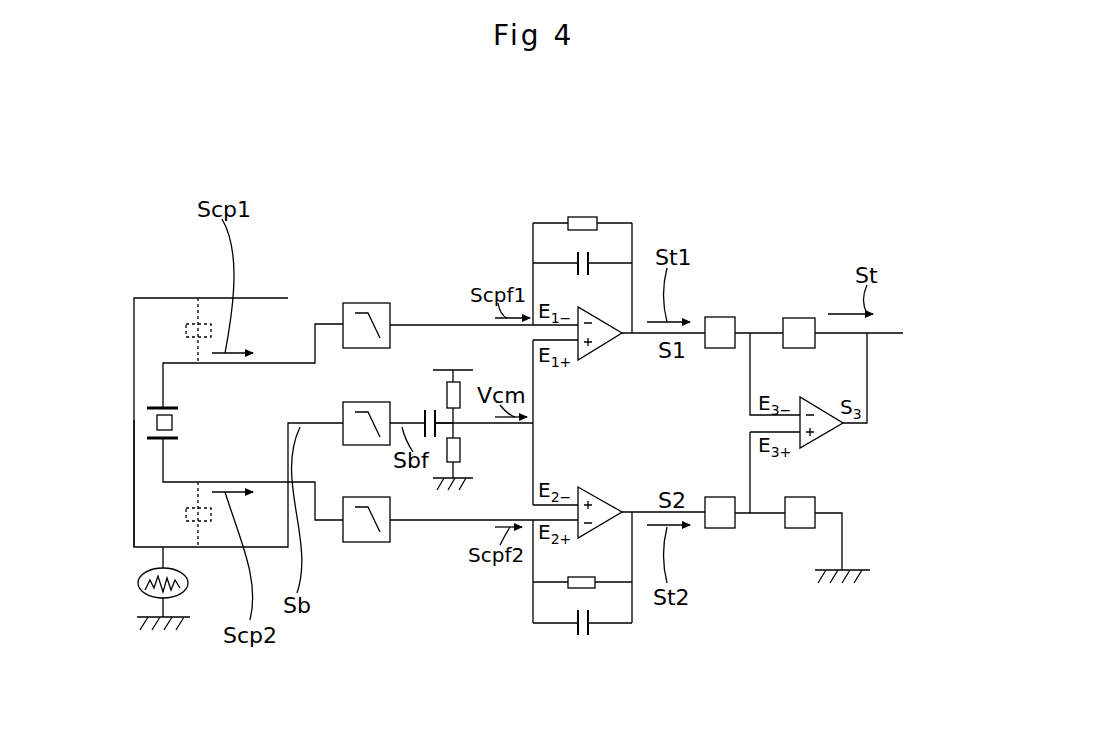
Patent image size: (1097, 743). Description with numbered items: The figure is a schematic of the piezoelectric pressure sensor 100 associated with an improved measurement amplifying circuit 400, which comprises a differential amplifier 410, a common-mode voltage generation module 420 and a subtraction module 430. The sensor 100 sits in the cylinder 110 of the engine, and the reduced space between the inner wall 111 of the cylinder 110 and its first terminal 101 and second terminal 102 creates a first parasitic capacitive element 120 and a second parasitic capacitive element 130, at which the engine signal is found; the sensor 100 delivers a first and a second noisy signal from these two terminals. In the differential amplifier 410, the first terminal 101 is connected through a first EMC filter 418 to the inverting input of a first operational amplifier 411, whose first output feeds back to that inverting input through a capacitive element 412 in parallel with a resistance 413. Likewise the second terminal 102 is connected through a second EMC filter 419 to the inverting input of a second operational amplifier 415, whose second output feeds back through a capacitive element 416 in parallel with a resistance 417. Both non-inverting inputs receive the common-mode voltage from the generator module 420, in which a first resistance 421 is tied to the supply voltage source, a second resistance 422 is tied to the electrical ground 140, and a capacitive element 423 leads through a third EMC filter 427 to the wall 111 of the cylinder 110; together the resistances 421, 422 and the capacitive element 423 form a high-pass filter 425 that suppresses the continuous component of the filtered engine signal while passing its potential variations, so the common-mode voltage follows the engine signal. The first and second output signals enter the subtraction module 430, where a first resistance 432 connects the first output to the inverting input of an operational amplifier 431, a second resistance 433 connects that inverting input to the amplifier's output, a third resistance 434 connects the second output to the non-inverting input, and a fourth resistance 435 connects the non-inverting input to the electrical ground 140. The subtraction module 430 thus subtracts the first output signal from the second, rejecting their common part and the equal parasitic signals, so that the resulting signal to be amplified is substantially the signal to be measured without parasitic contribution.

The piezoelectric pressure sensor 100 is at (160, 350).
The first terminal 101 is at (212, 365).
The second terminal 102 is at (212, 482).
The cylinder 110 is at (134, 432).
The wall of the cylinder 111 is at (134, 490).
The first parasitic capacitive element 120 is at (198, 305).
The second parasitic capacitive element 130 is at (198, 532).
The electrical ground 140 is at (140, 612).
The measurement amplifying circuit 400 is at (720, 178).
The differential amplifier 410 is at (585, 172).
The first operational amplifier 411 is at (600, 345).
The capacitive element 412 is at (592, 255).
The resistance 413 is at (583, 217).
The second operational amplifier 415 is at (600, 492).
The capacitive element 416 is at (583, 633).
The resistance 417 is at (587, 587).
The first EMC filter 418 is at (365, 303).
The second EMC filter 419 is at (360, 542).
The common-mode voltage generation module 420 is at (418, 383).
The first resistance 421 is at (458, 393).
The second resistance 422 is at (457, 450).
The capacitive element 423 is at (427, 410).
The high-pass filter 425 is at (433, 387).
The third EMC filter 427 is at (370, 400).
The subtraction module 430 is at (780, 277).
The operational amplifier 431 is at (827, 427).
The first resistance 432 is at (722, 317).
The second resistance 433 is at (798, 317).
The third resistance 434 is at (720, 528).
The fourth resistance 435 is at (797, 528).